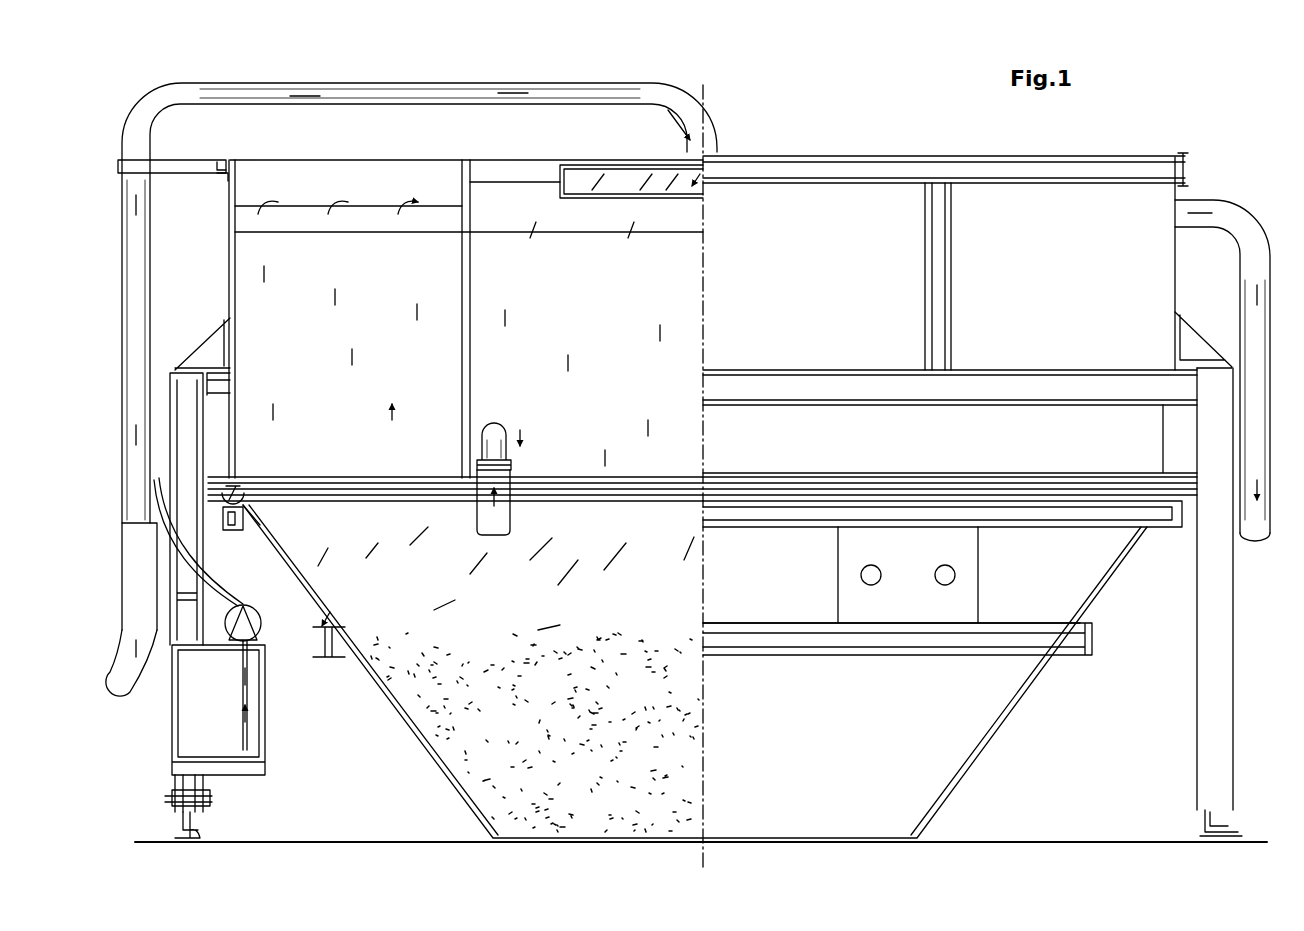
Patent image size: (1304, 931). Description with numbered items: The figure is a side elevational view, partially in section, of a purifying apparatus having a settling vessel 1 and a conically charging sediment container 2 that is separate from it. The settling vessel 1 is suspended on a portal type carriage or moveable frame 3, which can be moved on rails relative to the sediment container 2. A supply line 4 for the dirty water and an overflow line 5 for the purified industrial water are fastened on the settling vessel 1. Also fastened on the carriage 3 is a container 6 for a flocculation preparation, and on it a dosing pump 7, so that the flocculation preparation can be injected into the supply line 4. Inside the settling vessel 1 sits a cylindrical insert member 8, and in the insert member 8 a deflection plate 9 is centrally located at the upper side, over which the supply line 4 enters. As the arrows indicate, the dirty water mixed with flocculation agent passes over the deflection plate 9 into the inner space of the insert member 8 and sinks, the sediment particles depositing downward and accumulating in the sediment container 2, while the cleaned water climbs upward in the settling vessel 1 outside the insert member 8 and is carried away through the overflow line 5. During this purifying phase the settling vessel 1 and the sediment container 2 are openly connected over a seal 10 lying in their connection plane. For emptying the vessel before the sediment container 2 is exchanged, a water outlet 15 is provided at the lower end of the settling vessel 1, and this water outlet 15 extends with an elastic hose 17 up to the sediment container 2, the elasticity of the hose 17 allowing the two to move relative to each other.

The settling vessel 1 is at (898, 192).
The sediment container 2 is at (955, 762).
The carriage 3 is at (188, 410).
The supply line 4 is at (148, 112).
The overflow line 5 is at (1225, 203).
The container for flocculation preparation 6 is at (265, 768).
The dosing pump 7 is at (262, 620).
The cylindrical insert member 8 is at (470, 262).
The deflection plate 9 is at (703, 162).
The seal 10 is at (240, 480).
The water outlet 15 is at (495, 434).
The elastic hose 17 is at (500, 515).